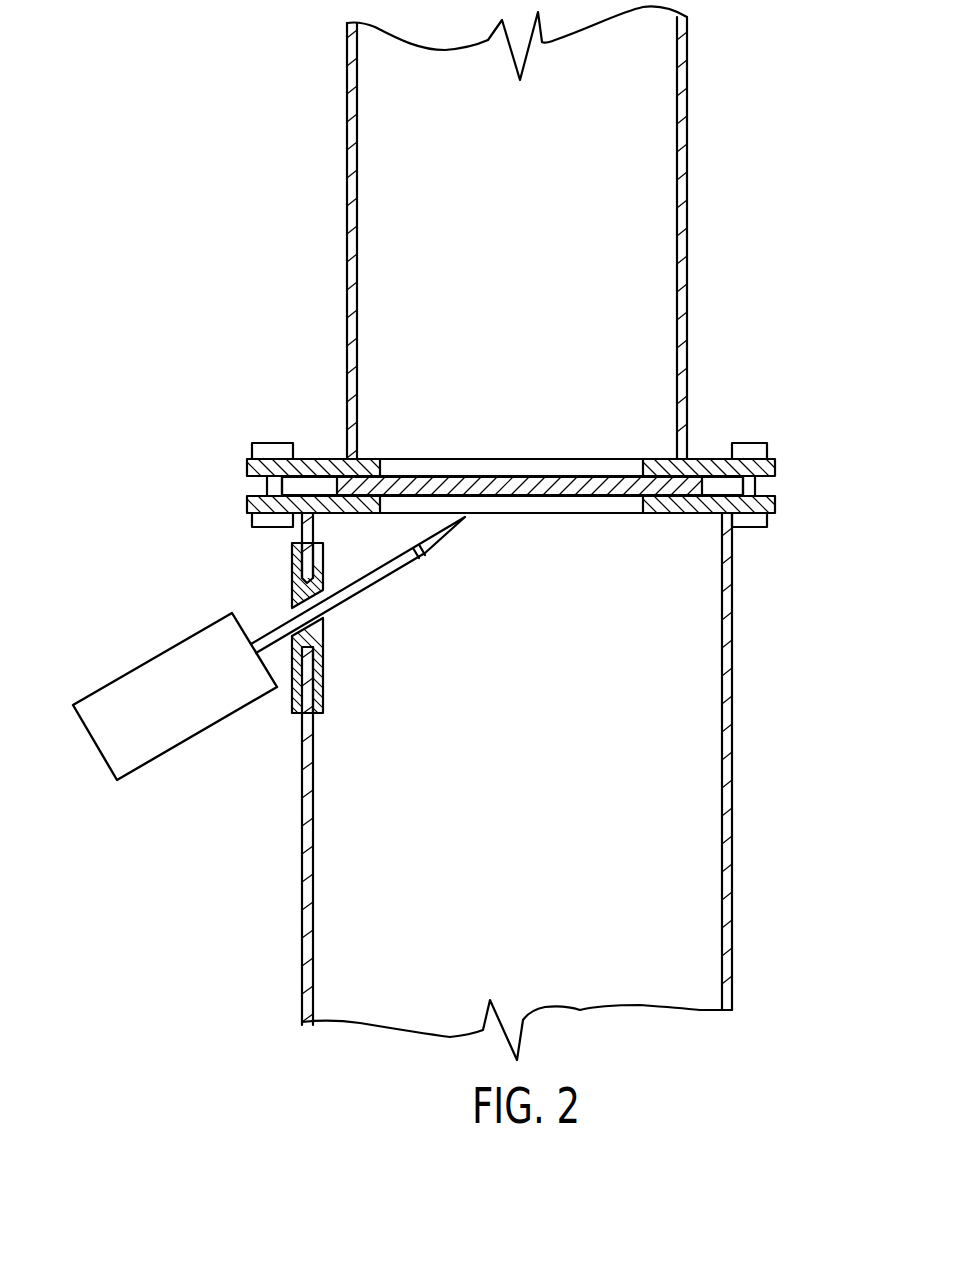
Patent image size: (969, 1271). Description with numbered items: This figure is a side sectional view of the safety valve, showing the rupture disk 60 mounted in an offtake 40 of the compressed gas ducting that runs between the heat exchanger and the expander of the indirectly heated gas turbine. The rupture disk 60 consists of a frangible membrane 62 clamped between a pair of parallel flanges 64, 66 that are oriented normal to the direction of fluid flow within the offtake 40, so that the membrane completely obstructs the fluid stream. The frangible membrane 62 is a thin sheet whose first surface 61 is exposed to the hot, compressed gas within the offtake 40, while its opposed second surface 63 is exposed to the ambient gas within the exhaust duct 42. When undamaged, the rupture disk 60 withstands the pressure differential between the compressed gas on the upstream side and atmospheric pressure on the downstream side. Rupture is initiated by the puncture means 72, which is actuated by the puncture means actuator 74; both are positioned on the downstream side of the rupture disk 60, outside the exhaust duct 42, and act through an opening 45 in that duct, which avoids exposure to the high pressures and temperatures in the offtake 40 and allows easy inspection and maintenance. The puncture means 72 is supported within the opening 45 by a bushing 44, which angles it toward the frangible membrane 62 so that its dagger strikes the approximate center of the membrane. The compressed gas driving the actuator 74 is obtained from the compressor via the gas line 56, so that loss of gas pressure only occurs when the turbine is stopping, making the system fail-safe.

The offtake 40 is at (657, 230).
The exhaust duct 42 is at (707, 877).
The bushing 44 is at (323, 713).
The opening 45 is at (310, 615).
The gas line 56 is at (156, 681).
The rupture disk 60 is at (722, 403).
The first surface 61 is at (443, 472).
The frangible membrane 62 is at (528, 485).
The second surface 63 is at (568, 495).
The flange 64 is at (775, 462).
The flange 66 is at (775, 500).
The puncture means 72 is at (395, 567).
The puncture means actuator 74 is at (183, 709).